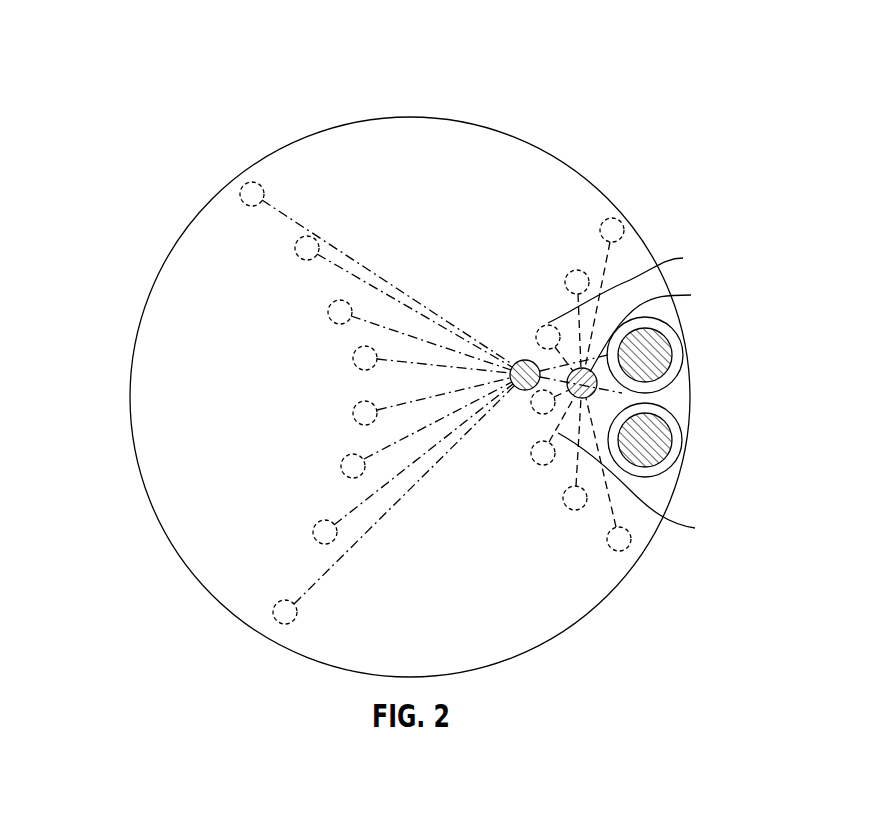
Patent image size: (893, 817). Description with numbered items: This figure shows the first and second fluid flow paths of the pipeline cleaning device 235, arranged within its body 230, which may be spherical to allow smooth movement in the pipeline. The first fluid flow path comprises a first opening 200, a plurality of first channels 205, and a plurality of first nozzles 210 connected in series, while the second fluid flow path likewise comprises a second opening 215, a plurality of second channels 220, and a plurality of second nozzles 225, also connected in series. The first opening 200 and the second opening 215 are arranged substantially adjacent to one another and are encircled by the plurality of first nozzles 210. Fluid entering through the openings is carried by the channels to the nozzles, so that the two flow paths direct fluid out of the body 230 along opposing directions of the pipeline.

The first opening 200 is at (690, 445).
The first channels 205 is at (644, 394).
The first nozzles 210 is at (600, 233).
The second opening 215 is at (690, 352).
The second channels 220 is at (339, 246).
The second nozzles 225 is at (245, 193).
The body 230 is at (133, 464).
The pipeline cleaning device 235 is at (345, 62).